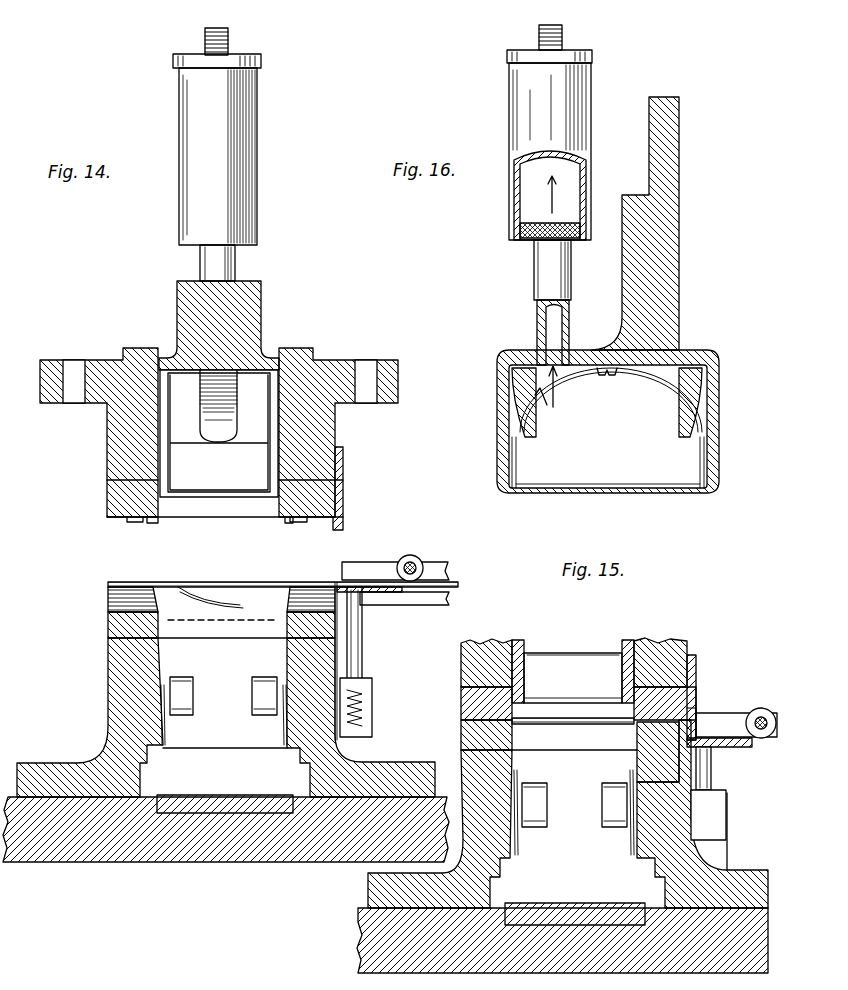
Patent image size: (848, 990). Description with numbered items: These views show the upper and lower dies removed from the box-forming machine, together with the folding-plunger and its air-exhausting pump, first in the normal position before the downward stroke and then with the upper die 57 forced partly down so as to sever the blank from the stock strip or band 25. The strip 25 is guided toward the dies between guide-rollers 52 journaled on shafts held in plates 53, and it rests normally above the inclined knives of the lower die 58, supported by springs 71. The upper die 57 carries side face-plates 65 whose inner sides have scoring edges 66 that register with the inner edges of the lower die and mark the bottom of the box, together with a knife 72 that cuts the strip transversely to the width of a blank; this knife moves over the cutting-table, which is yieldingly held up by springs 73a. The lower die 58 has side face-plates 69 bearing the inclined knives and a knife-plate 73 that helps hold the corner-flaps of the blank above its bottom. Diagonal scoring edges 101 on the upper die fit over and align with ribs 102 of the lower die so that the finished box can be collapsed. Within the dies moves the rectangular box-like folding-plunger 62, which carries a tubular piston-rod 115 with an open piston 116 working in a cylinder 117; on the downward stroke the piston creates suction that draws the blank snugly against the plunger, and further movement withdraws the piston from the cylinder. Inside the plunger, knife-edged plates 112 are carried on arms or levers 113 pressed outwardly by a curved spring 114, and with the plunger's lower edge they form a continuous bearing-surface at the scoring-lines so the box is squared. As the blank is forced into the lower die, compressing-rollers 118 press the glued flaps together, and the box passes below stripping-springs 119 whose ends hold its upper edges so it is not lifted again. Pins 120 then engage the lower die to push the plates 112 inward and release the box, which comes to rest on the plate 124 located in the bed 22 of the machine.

In FIG. 14, the bed 22 is at (107, 862).
In FIG. 15, the bed 22 is at (359, 920).
In FIG. 14, the stock strip or band 25 is at (286, 588).
In FIG. 15, the stock strip or band 25 is at (732, 730).
In FIG. 14, the guide-rollers 52 is at (414, 562).
In FIG. 15, the guide-rollers 52 is at (762, 708).
In FIG. 14, the plates 53 is at (450, 570).
In FIG. 14, the upper die 57 is at (219, 432).
In FIG. 15, the upper die 57 is at (602, 660).
In FIG. 14, the lower die 58 is at (226, 708).
In FIG. 15, the lower die 58 is at (569, 814).
In FIG. 14, the folding-plunger 62 is at (262, 323).
In FIG. 16, the folding-plunger 62 is at (690, 322).
In FIG. 15, the folding-plunger 62 is at (518, 647).
In FIG. 14, the side face-plates 65 is at (107, 502).
In FIG. 15, the side face-plates 65 is at (461, 711).
In FIG. 14, the scoring edges 66 is at (160, 522).
In FIG. 15, the scoring edges 66 is at (528, 723).
In FIG. 14, the side pieces or face-plates of the lower die 69 is at (108, 629).
In FIG. 14, the springs 71 is at (222, 589).
In FIG. 14, the knife 72 is at (343, 494).
In FIG. 15, the knife 72 is at (697, 700).
In FIG. 14, the knife-plate 73 is at (364, 655).
In FIG. 15, the knife-plate 73 is at (712, 774).
In FIG. 14, the springs 73a is at (372, 705).
In FIG. 14, the scoring edges 101 is at (132, 522).
In FIG. 15, the scoring edges 101 is at (697, 712).
In FIG. 14, the ribs 102 is at (128, 608).
In FIG. 15, the ribs 102 is at (464, 736).
In FIG. 14, the knife-edged plates 112 is at (219, 433).
In FIG. 16, the knife-edged plates 112 is at (521, 489).
In FIG. 15, the knife-edged plates 112 is at (573, 678).
In FIG. 16, the arms or levers 113 is at (540, 410).
In FIG. 16, the curved spring 114 is at (650, 381).
In FIG. 16, the tubular piston-rod 115 is at (537, 300).
In FIG. 16, the open piston 116 is at (525, 241).
In FIG. 14, the cylinder 117 is at (256, 152).
In FIG. 16, the cylinder 117 is at (512, 119).
In FIG. 14, the compressing-rollers 118 is at (258, 705).
In FIG. 15, the compressing-rollers 118 is at (616, 790).
In FIG. 14, the stripping-springs 119 is at (165, 746).
In FIG. 15, the stripping-springs 119 is at (632, 848).
In FIG. 16, the pins 120 is at (507, 407).
In FIG. 14, the plate 124 is at (228, 800).
In FIG. 15, the plate 124 is at (606, 904).